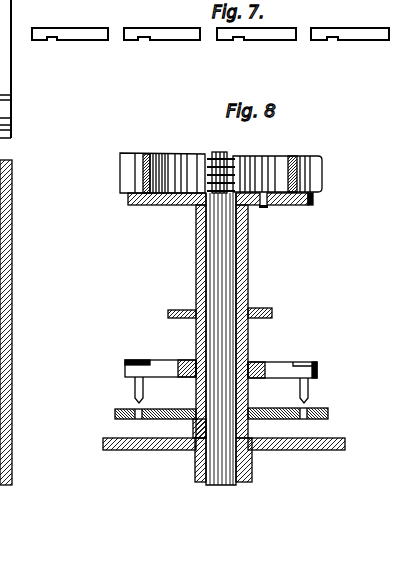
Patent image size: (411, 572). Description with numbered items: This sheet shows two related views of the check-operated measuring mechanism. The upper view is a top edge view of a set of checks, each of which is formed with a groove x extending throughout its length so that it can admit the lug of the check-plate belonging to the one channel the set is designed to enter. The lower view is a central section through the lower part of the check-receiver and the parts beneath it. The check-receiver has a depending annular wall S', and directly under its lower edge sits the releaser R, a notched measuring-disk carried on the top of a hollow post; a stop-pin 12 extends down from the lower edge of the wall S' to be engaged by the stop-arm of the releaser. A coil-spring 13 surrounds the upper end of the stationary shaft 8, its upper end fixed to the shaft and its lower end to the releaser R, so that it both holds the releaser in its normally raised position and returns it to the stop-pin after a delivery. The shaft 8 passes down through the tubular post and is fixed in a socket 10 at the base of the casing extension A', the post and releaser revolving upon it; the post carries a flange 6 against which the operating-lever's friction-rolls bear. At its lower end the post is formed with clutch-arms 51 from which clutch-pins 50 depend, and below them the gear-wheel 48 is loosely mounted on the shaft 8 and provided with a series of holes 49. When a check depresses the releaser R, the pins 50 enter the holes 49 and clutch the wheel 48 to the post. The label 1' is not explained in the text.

In FIG. 7, the groove x is at (52, 40).
In FIG. 8, the annular wall S' is at (221, 158).
In FIG. 8, the coil-spring 13 is at (232, 168).
In FIG. 8, the releaser R is at (313, 200).
In FIG. 8, the stop-pin 12 is at (288, 207).
In FIG. 8, the sleeve 1' is at (229, 321).
In FIG. 8, the shaft 8 is at (248, 277).
In FIG. 8, the flange 6 is at (222, 305).
In FIG. 8, the clutch-arms 51 is at (275, 370).
In FIG. 8, the clutch-pins 50 is at (135, 392).
In FIG. 8, the gear-wheel 48 is at (115, 417).
In FIG. 8, the holes 49 is at (312, 425).
In FIG. 8, the socket 10 is at (195, 462).
In FIG. 8, the casing extension A' is at (290, 460).